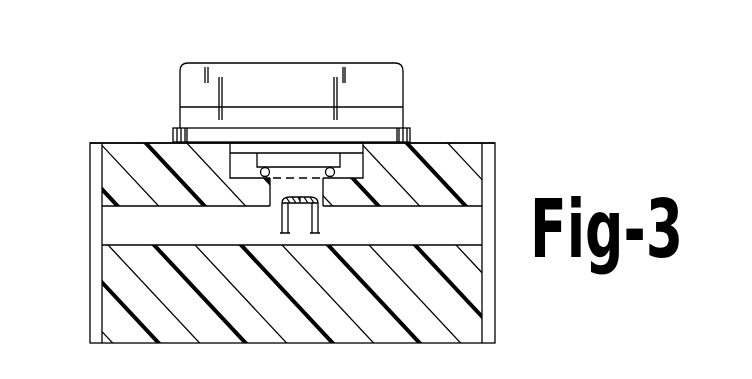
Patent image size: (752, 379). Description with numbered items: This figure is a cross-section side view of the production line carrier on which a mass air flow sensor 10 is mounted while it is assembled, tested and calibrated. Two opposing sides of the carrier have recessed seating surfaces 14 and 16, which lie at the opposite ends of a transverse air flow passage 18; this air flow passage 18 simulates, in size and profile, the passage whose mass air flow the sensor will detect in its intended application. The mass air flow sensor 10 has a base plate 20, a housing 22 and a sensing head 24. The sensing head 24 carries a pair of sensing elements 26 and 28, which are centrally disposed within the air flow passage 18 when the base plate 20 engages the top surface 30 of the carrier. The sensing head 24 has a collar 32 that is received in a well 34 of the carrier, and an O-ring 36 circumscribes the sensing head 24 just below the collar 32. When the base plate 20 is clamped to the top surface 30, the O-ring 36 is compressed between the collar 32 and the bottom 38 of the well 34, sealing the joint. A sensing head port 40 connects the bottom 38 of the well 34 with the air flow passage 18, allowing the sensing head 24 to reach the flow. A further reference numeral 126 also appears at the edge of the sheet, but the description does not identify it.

The mass air flow sensor 10 is at (402, 85).
The recessed seating surface 14 is at (102, 323).
The recessed seating surface 16 is at (482, 287).
The air flow passage 18 is at (450, 243).
The base plate 20 is at (173, 134).
The housing 22 is at (207, 63).
The sensing head 24 is at (277, 212).
The sensing element 26 is at (282, 232).
The sensing element 28 is at (317, 227).
The top surface 30 is at (472, 142).
The collar 32 is at (230, 145).
The well 34 is at (392, 176).
The O-ring 36 is at (185, 128).
The bottom of the well 38 is at (412, 163).
The sensing head port 40 is at (323, 188).
The element 126 is at (372, 378).